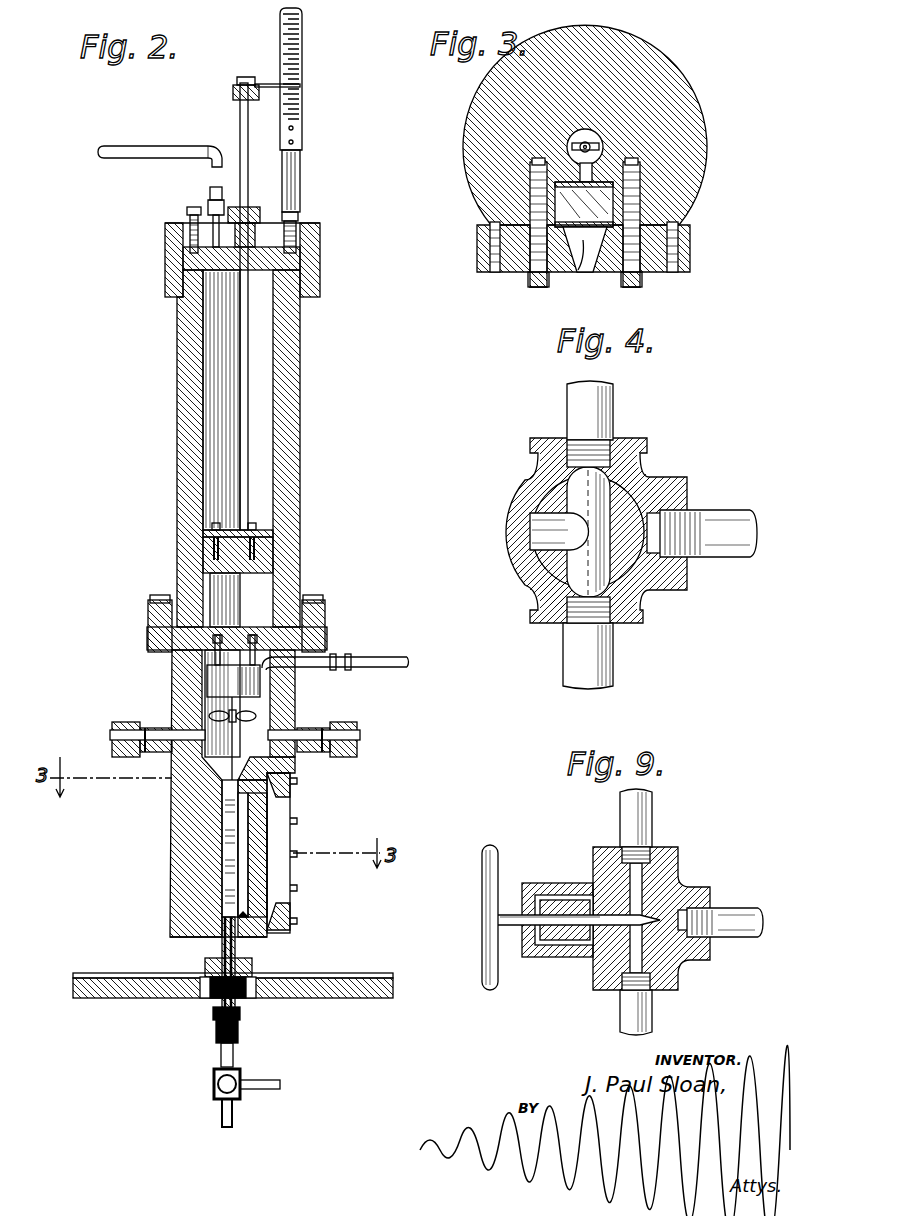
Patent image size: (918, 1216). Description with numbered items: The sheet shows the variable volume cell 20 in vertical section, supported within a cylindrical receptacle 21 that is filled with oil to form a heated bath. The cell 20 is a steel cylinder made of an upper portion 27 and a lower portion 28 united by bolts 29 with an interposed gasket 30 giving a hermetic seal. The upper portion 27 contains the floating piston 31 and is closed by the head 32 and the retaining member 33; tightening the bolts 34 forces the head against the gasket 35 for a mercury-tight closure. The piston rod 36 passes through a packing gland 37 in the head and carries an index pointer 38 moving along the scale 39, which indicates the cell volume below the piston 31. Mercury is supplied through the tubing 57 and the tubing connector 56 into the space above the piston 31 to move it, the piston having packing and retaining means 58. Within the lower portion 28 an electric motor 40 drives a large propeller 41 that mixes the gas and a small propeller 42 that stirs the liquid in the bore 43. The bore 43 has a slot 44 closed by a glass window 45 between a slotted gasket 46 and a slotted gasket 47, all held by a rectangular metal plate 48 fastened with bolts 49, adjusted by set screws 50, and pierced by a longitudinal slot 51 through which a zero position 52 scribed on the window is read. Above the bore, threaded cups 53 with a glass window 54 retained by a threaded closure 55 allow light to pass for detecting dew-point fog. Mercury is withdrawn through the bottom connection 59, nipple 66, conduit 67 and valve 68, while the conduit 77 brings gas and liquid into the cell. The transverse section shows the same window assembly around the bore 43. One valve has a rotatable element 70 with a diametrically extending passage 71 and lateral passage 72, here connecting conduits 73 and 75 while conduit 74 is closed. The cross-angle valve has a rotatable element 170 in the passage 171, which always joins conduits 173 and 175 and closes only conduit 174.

In FIG. 2, the variable volume cell 20 is at (174, 421).
In FIG. 3, the variable volume cell 20 is at (479, 80).
In FIG. 2, the cylindrical receptacle 21 is at (105, 985).
In FIG. 2, the upper portion 27 is at (302, 402).
In FIG. 2, the lower portion 28 is at (178, 845).
In FIG. 3, the lower portion 28 is at (711, 177).
In FIG. 2, the bolts 29 is at (147, 612).
In FIG. 2, the gasket 30 is at (178, 638).
In FIG. 2, the floating piston 31 is at (256, 565).
In FIG. 2, the head 32 is at (312, 255).
In FIG. 2, the retaining member 33 is at (172, 248).
In FIG. 2, the bolts 34 is at (300, 221).
In FIG. 2, the gasket 35 is at (166, 279).
In FIG. 2, the piston rod 36 is at (232, 375).
In FIG. 2, the packing gland 37 is at (258, 206).
In FIG. 2, the index pointer 38 is at (270, 82).
In FIG. 2, the scale 39 is at (305, 37).
In FIG. 2, the electric motor 40 is at (222, 677).
In FIG. 2, the large propeller 41 is at (265, 714).
In FIG. 2, the small propeller 42 is at (225, 808).
In FIG. 3, the small propeller 42 is at (602, 141).
In FIG. 2, the bore 43 is at (228, 870).
In FIG. 3, the bore 43 is at (593, 132).
In FIG. 3, the slot 44 is at (594, 165).
In FIG. 2, the glass window 45 is at (262, 811).
In FIG. 3, the glass window 45 is at (568, 200).
In FIG. 2, the slotted gasket 46 is at (258, 938).
In FIG. 3, the slotted gasket 46 is at (530, 158).
In FIG. 2, the slotted gasket 47 is at (292, 915).
In FIG. 3, the slotted gasket 47 is at (604, 268).
In FIG. 2, the rectangular metal plate 48 is at (290, 930).
In FIG. 3, the rectangular metal plate 48 is at (510, 270).
In FIG. 3, the bolts 49 is at (658, 272).
In FIG. 3, the set screws 50 is at (692, 247).
In FIG. 3, the longitudinal slot 51 is at (585, 243).
In FIG. 2, the zero position 52 is at (275, 848).
In FIG. 2, the threaded cups 53 is at (166, 752).
In FIG. 2, the glass window 54 is at (145, 752).
In FIG. 2, the threaded closure 55 is at (112, 717).
In FIG. 2, the tubing connector 56 is at (178, 232).
In FIG. 2, the tubing 57 is at (163, 147).
In FIG. 2, the packing and retaining means 58 is at (202, 535).
In FIG. 2, the bottom connection 59 is at (220, 945).
In FIG. 2, the nipple 66 is at (213, 1012).
In FIG. 2, the conduit 67 is at (222, 1055).
In FIG. 2, the valve 68 is at (213, 1080).
In FIG. 4, the rotatable element 70 is at (642, 483).
In FIG. 4, the diametrically extending passage 71 is at (580, 567).
In FIG. 4, the lateral passage 72 is at (540, 523).
In FIG. 4, the conduit 73 is at (614, 400).
In FIG. 4, the conduit 74 is at (722, 520).
In FIG. 4, the conduit 75 is at (614, 645).
In FIG. 2, the conduit 77 is at (368, 658).
In FIG. 9, the rotatable element 170 is at (585, 912).
In FIG. 9, the passage 171 is at (632, 930).
In FIG. 9, the conduit 173 is at (656, 812).
In FIG. 9, the conduit 174 is at (737, 917).
In FIG. 9, the conduit 175 is at (626, 1018).